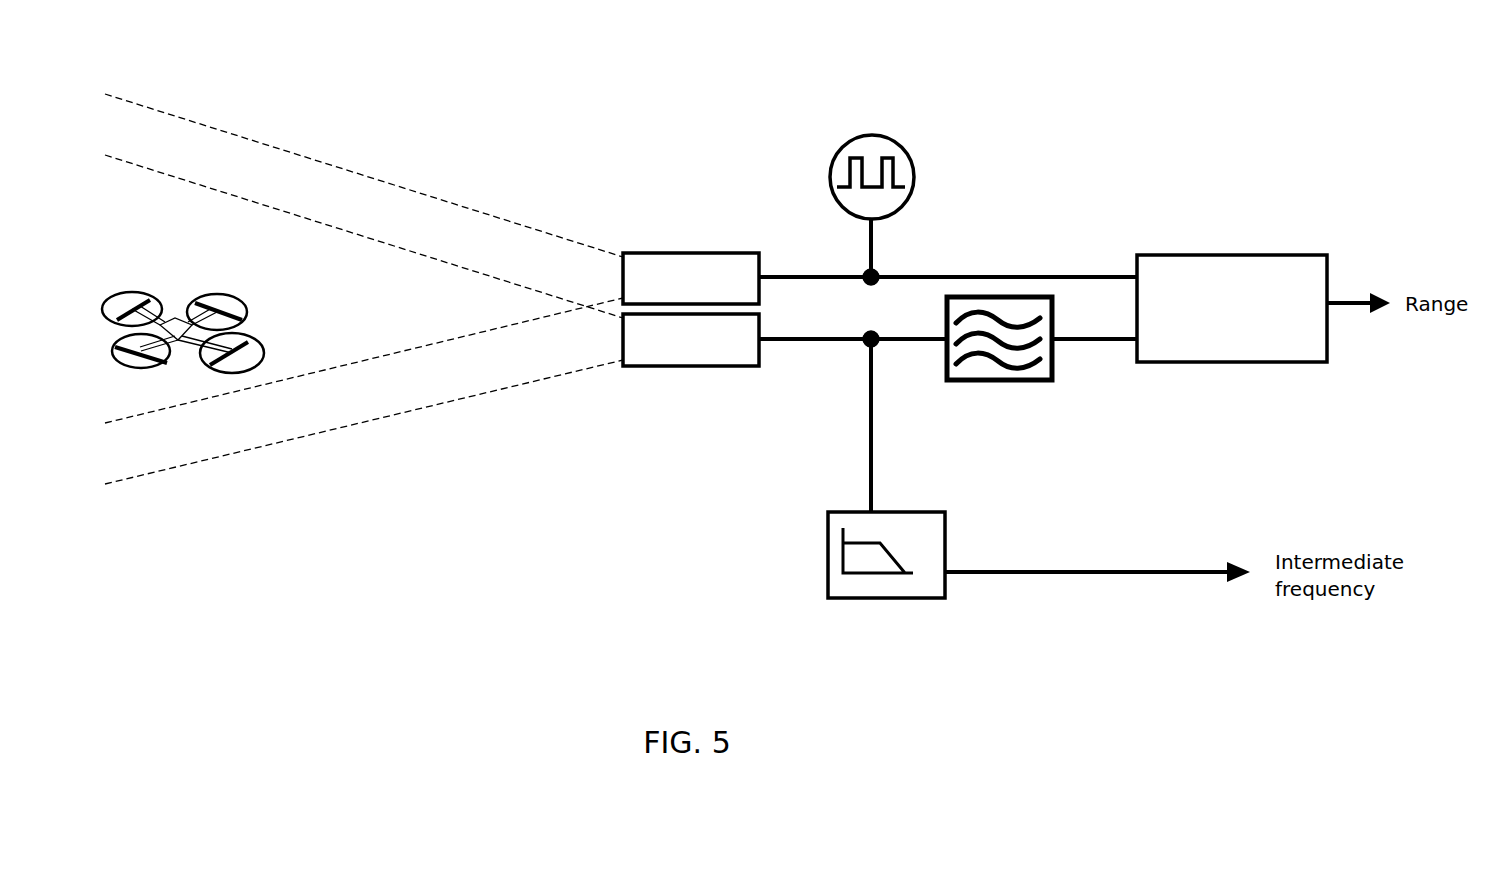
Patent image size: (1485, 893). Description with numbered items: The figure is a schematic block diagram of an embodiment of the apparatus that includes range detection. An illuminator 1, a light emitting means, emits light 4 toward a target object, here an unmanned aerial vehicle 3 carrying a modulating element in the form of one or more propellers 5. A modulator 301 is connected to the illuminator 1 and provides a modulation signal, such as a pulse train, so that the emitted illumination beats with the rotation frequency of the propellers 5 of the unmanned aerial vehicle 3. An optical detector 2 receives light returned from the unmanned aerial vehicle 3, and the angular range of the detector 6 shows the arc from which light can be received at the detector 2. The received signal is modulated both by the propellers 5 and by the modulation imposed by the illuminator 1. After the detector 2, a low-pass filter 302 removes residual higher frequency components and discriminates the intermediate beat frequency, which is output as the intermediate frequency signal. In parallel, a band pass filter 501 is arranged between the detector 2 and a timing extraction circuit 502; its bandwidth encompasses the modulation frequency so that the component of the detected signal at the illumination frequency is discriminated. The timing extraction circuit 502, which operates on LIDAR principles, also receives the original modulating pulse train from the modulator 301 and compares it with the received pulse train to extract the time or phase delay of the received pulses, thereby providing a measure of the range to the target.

The illuminator 1 is at (688, 252).
The optical detector 2 is at (720, 368).
The unmanned aerial vehicle 3 is at (212, 294).
The emitted light 4 is at (460, 228).
The propeller 5 is at (240, 311).
The angular range of the detector 6 is at (472, 387).
The modulator 301 is at (872, 133).
The low-pass filter 302 is at (878, 600).
The band pass filter 501 is at (1008, 383).
The timing extraction circuit 502 is at (1235, 365).